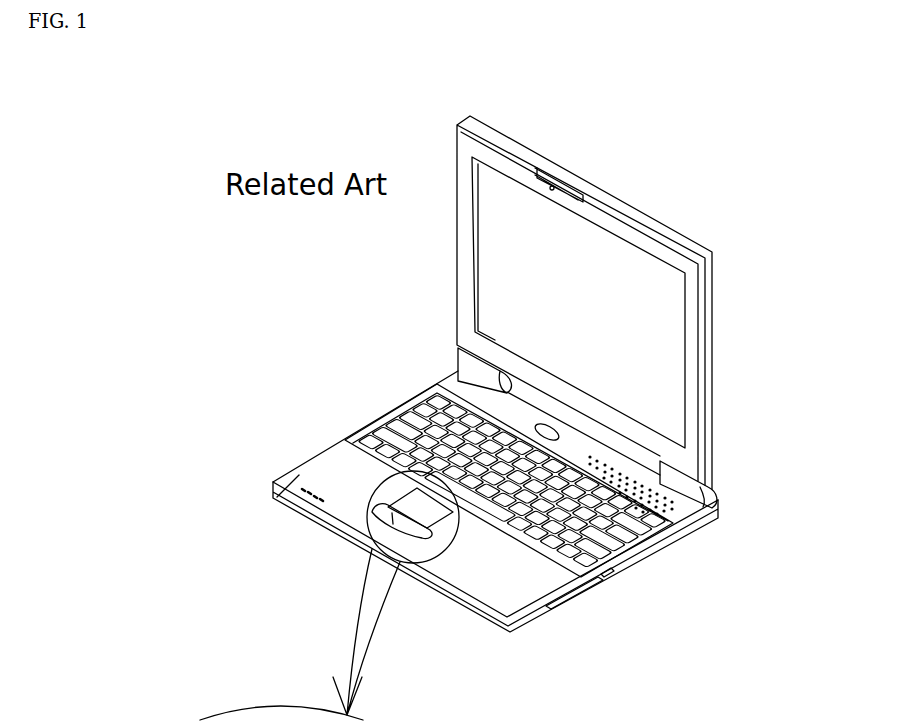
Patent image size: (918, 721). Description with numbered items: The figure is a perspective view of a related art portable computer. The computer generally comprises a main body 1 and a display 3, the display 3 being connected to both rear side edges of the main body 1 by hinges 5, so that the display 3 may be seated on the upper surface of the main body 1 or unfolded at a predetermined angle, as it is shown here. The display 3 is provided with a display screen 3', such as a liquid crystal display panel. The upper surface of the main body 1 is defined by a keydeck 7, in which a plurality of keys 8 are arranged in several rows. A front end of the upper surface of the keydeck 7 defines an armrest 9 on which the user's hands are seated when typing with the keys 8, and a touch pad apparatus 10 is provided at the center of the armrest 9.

The main body 1 is at (673, 538).
The display 3 is at (634, 302).
The display screen 3' is at (643, 302).
The hinges 5 is at (473, 362).
The keydeck 7 is at (272, 488).
The keys 8 is at (603, 553).
The armrest 9 is at (503, 580).
The touch pad apparatus 10 is at (379, 479).